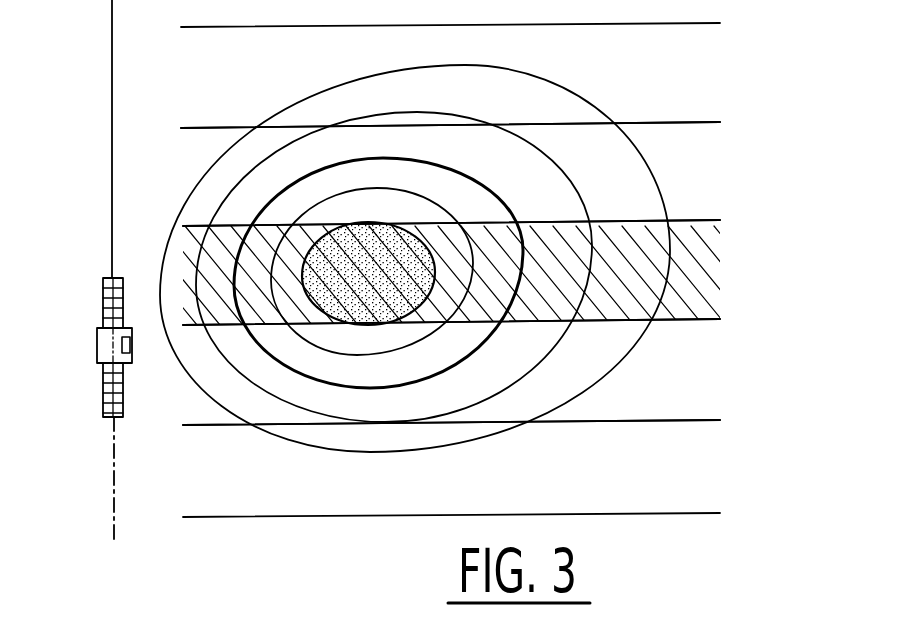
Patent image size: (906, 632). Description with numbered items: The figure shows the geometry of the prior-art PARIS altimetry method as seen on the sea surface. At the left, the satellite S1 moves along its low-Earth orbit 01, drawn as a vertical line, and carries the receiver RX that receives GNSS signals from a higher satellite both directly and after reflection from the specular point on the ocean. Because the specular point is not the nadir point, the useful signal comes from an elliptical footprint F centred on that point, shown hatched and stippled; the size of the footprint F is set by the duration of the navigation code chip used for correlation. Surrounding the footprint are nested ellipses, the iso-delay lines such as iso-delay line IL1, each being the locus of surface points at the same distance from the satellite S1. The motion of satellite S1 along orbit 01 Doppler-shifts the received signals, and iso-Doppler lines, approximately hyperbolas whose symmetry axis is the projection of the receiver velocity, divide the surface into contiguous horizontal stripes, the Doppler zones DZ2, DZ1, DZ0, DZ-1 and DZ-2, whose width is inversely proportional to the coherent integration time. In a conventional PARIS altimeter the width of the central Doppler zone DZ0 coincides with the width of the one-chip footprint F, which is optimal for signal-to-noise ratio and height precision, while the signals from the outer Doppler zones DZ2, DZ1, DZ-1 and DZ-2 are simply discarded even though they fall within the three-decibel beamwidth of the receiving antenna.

The LEO orbit 01 is at (112, 107).
The satellite S1 is at (97, 348).
The receiver RX is at (131, 343).
The iso-delay line IL1 is at (300, 288).
The elliptical footprint F is at (357, 305).
The outer Doppler zone DZ2 is at (708, 82).
The outer Doppler zone DZ1 is at (706, 173).
The central Doppler zone DZ0 is at (705, 272).
The outer Doppler zone DZ-1 is at (703, 370).
The outer Doppler zone DZ-2 is at (709, 470).